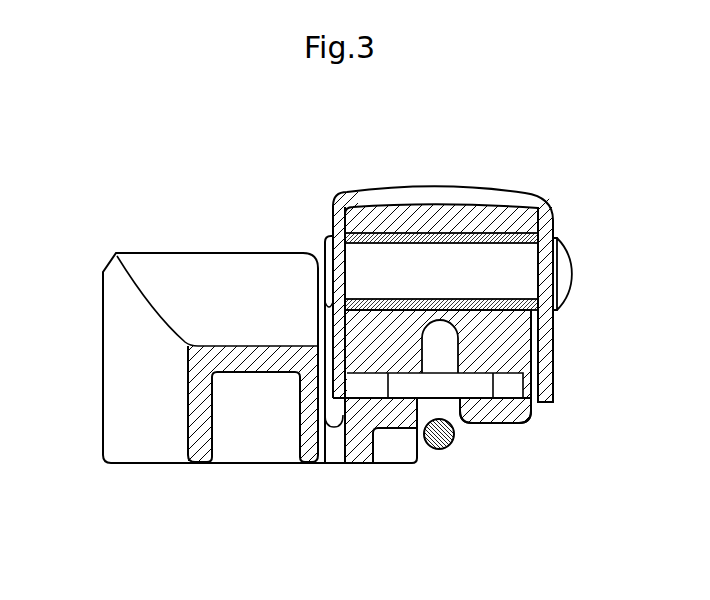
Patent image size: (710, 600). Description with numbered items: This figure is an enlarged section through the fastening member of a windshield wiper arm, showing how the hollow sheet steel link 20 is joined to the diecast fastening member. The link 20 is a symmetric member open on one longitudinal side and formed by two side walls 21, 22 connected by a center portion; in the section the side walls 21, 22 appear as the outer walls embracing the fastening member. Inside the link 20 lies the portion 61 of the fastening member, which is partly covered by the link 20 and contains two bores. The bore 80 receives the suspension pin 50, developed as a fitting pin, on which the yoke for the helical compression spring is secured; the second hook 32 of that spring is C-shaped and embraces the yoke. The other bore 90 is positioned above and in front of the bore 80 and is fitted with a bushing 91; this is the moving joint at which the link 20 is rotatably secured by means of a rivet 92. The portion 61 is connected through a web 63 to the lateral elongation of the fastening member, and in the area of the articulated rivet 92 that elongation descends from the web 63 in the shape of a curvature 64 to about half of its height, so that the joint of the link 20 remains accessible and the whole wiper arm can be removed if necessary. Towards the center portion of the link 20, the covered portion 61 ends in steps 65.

The link 20 is at (410, 195).
The side wall 21 is at (548, 221).
The side wall 22 is at (333, 214).
The second hook 32 is at (450, 448).
The suspension pin 50 is at (503, 370).
The portion 61 is at (367, 208).
The web 63 is at (335, 452).
The curvature 64 is at (165, 275).
The steps 65 is at (530, 427).
The bore 80 is at (518, 387).
The bore 90 is at (503, 235).
The bushing 91 is at (457, 235).
The rivet 92 is at (518, 268).